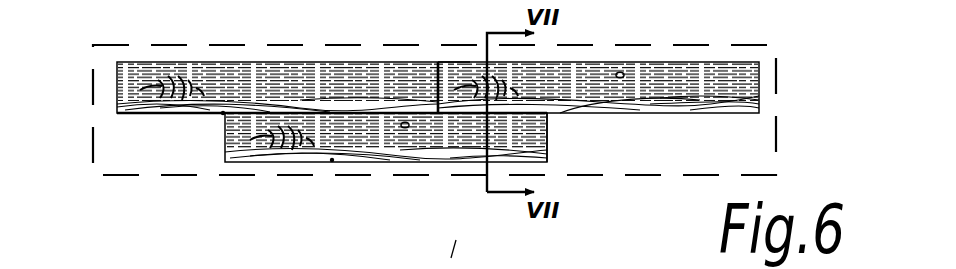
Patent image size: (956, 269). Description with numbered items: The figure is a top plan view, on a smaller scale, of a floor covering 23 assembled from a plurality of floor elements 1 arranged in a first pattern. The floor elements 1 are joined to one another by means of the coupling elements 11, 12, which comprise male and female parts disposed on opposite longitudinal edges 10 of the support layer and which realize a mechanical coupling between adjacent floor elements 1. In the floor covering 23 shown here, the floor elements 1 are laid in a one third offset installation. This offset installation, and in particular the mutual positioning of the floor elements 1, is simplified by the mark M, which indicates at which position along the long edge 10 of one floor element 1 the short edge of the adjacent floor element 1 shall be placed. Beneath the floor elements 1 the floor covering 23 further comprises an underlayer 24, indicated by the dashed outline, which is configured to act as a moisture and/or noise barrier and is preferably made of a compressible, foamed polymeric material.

The floor element 1 is at (438, 112).
The longitudinal edge 10 is at (207, 4).
The first coupling element 11 is at (437, 62).
The first coupling element 12 is at (441, 64).
The floor covering 23 is at (125, 47).
The underlayer 24 is at (100, 134).
The mark M is at (223, 113).